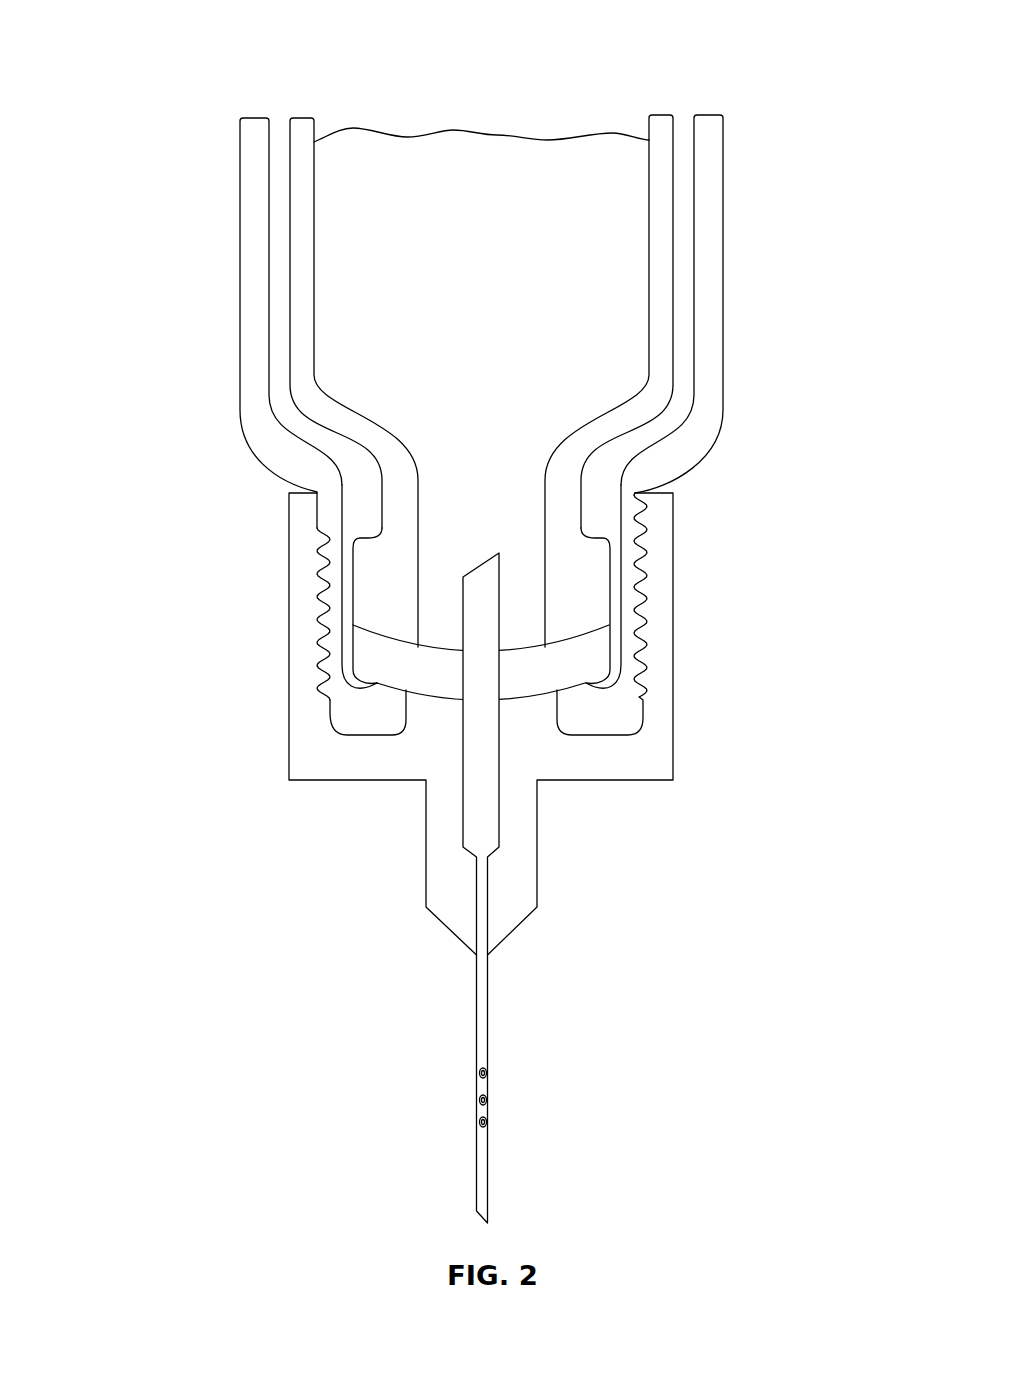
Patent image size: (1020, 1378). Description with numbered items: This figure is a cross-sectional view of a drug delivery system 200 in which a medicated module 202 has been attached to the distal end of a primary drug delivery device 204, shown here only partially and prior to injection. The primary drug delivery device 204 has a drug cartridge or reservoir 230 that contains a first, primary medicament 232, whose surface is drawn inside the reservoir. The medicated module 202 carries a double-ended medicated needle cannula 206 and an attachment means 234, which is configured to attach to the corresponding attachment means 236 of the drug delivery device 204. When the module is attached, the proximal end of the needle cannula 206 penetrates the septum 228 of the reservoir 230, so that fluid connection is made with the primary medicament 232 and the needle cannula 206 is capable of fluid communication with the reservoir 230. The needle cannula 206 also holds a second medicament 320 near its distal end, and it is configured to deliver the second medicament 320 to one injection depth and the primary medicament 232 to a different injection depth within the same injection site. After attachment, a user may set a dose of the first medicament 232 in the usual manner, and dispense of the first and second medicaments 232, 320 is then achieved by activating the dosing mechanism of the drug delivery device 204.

The drug delivery system 200 is at (118, 177).
The medicated module 202 is at (228, 548).
The primary drug delivery device 204 is at (190, 122).
The needle cannula 206 is at (463, 823).
The septum 228 is at (577, 658).
The reservoir 230 is at (300, 130).
The primary medicament 232 is at (503, 158).
The attachment means 234 is at (300, 548).
The attachment means 236 is at (332, 522).
The second medicament 320 is at (476, 1100).